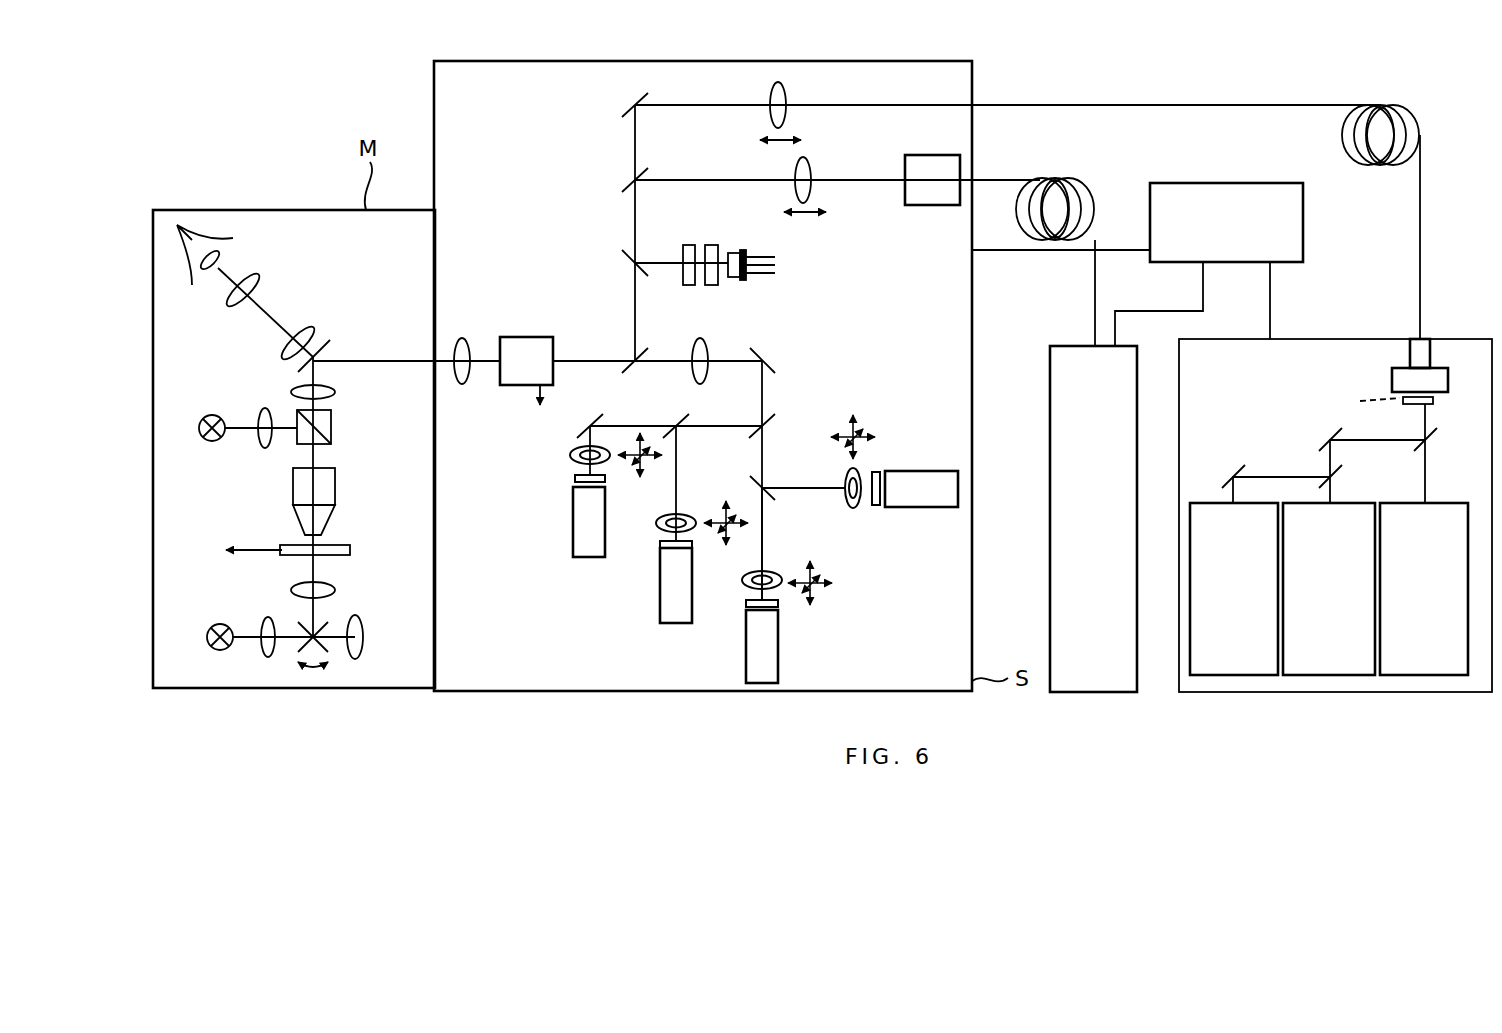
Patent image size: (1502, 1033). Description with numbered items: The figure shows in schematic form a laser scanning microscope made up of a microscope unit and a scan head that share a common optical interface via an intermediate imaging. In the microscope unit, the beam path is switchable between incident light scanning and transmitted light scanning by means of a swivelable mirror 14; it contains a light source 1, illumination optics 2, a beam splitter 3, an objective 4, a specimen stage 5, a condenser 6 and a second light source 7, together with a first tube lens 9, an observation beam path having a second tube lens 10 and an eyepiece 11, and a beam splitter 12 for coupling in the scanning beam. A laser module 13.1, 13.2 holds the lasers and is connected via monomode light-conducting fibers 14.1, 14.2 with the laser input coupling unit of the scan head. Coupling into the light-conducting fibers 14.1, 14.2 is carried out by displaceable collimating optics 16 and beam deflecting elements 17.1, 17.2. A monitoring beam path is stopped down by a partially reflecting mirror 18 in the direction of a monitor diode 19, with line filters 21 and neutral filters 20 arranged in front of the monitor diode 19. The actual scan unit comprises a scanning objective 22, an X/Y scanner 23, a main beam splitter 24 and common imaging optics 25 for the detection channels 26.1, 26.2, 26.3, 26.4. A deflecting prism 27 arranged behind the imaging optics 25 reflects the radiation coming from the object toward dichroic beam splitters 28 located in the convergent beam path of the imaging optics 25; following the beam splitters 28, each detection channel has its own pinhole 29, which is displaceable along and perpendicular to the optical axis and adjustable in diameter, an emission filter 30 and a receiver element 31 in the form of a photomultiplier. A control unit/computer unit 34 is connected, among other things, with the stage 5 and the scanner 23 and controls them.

The light source 1 is at (213, 415).
The illumination optics 2 is at (262, 446).
The beam splitter 3 is at (332, 428).
The objective 4 is at (337, 485).
The specimen stage 5 is at (352, 549).
The condenser 6 is at (335, 590).
The light source 7 is at (212, 625).
The first tube lens 9 is at (337, 392).
The second tube lens 10 is at (318, 335).
The eyepiece 11 is at (262, 282).
The beam splitter 12 is at (338, 348).
The swivelable mirror 14 is at (333, 625).
The control unit/computer unit 34 is at (1257, 183).
The beam deflecting element 17.2 is at (622, 106).
The beam deflecting element 17.1 is at (622, 180).
The partially reflecting mirror 18 is at (622, 263).
The displaceable collimating optics 16 is at (786, 92).
The monitor diode 19 is at (742, 282).
The neutral filters 20 is at (712, 286).
The line filters 21 is at (688, 286).
The scanning objective 22 is at (468, 338).
The X/Y scanner 23 is at (500, 380).
The main beam splitter 24 is at (630, 372).
The common imaging optics 25 is at (708, 378).
The deflecting prism 27 is at (776, 364).
The dichroic beam splitters 28 is at (682, 416).
The detection channel 26.3 is at (580, 436).
The detection channel 26.2 is at (680, 472).
The detection channel 26.4 is at (792, 488).
The detection channel 26.1 is at (765, 545).
The pinholes 29 is at (570, 455).
The emission filters 30 is at (575, 480).
The receiver elements 31 is at (573, 550).
The monomode light-conducting fiber 14.1 is at (1020, 180).
The monomode light-conducting fiber 14.2 is at (1160, 105).
The laser module 13.1 is at (1050, 520).
The laser module 13.2 is at (1305, 338).